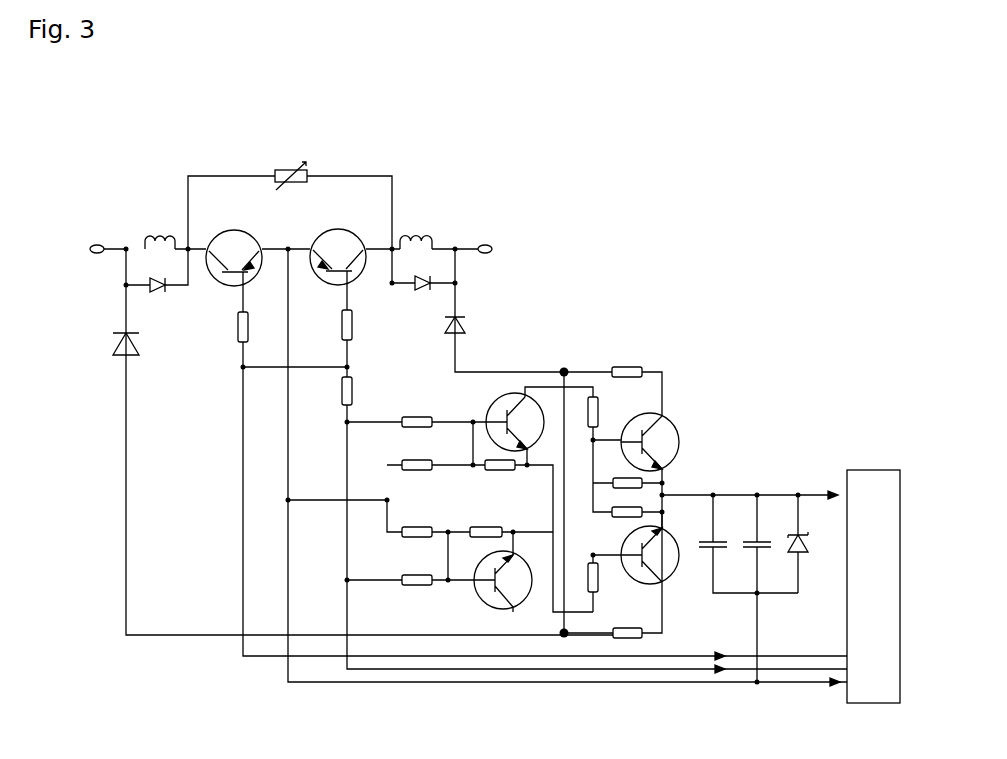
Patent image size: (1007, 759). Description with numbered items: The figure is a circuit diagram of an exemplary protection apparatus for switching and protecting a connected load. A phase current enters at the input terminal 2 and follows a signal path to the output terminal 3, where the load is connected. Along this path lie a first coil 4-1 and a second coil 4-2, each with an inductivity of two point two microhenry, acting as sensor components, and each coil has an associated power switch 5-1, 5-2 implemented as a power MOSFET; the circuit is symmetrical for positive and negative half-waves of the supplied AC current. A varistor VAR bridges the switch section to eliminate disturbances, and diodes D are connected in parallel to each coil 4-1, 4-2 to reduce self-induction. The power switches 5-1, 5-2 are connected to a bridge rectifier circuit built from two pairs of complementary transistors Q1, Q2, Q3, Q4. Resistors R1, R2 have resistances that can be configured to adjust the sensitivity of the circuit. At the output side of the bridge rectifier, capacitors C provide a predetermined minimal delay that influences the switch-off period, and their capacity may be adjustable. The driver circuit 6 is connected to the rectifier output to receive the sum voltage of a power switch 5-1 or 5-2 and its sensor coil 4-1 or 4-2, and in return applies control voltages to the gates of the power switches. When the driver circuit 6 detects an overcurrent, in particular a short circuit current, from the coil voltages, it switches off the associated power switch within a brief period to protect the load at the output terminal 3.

The input terminal 2 is at (94, 243).
The output terminal 3 is at (486, 243).
The first coil 4-1 is at (160, 236).
The second coil 4-2 is at (416, 236).
The power switch 5-1 is at (234, 230).
The power switch 5-2 is at (338, 229).
The varistor VAR is at (294, 186).
The diode D is at (158, 293).
The resistor R1 is at (627, 366).
The resistor R2 is at (628, 628).
The transistor Q1 is at (489, 407).
The transistor Q2 is at (681, 444).
The transistor Q3 is at (481, 599).
The transistor Q4 is at (673, 576).
The capacitor C is at (718, 541).
The driver circuit 6 is at (874, 470).